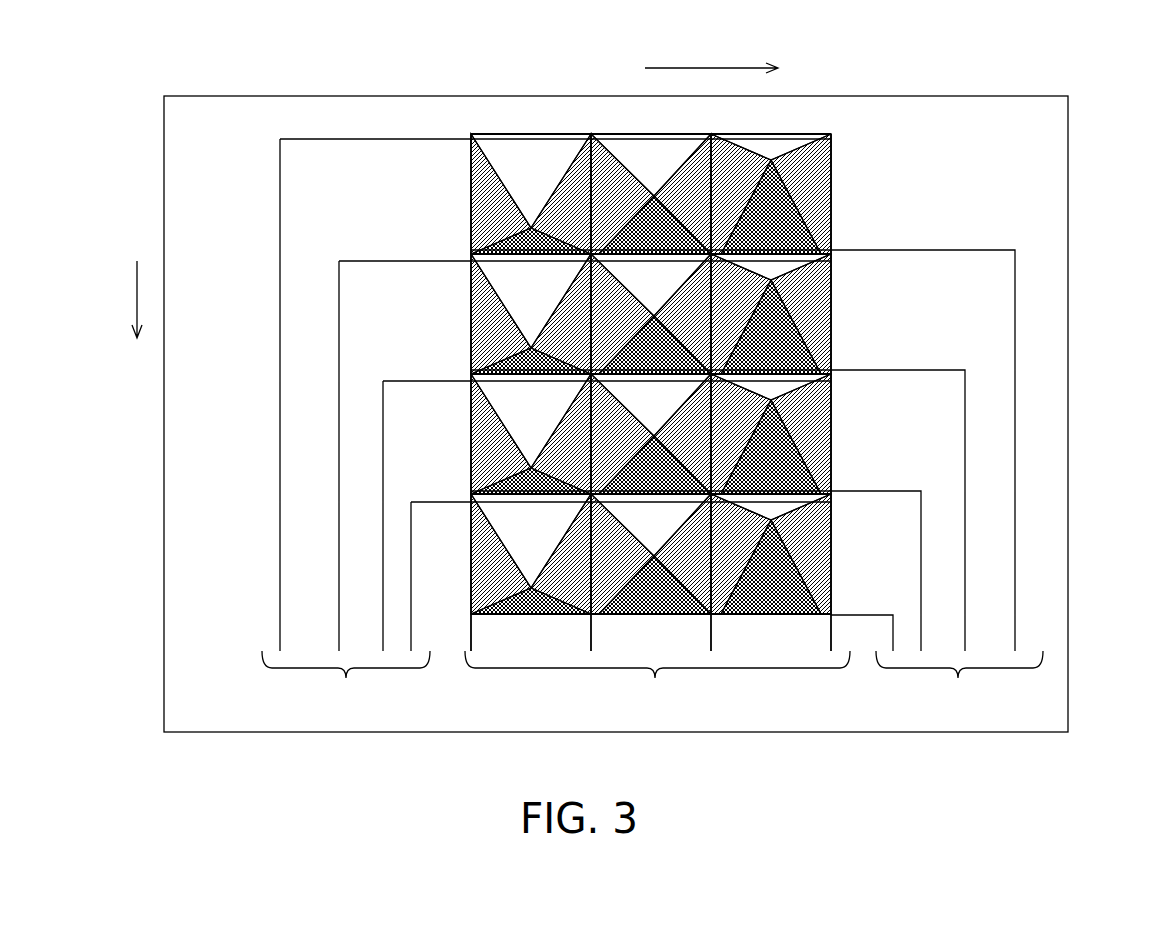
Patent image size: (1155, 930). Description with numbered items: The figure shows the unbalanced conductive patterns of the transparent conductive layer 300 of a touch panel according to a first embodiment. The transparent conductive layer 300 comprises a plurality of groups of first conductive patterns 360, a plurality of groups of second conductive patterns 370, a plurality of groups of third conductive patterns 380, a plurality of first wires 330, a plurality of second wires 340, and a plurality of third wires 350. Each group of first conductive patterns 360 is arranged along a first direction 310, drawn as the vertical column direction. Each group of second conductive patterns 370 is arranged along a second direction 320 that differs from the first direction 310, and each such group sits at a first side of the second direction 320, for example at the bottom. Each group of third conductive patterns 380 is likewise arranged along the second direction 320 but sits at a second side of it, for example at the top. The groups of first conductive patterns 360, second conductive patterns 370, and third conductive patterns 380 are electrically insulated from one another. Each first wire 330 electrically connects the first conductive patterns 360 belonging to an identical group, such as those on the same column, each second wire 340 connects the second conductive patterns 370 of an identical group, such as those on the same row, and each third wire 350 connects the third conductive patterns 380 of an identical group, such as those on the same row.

The transparent conductive layer 300 is at (1068, 175).
The first direction 310 is at (137, 288).
The second direction 320 is at (710, 68).
The first wires 330 is at (657, 425).
The second wires 340 is at (366, 427).
The third wires 350 is at (937, 483).
The first conductive patterns 360 is at (815, 183).
The second conductive patterns 370 is at (515, 172).
The third conductive patterns 380 is at (832, 348).